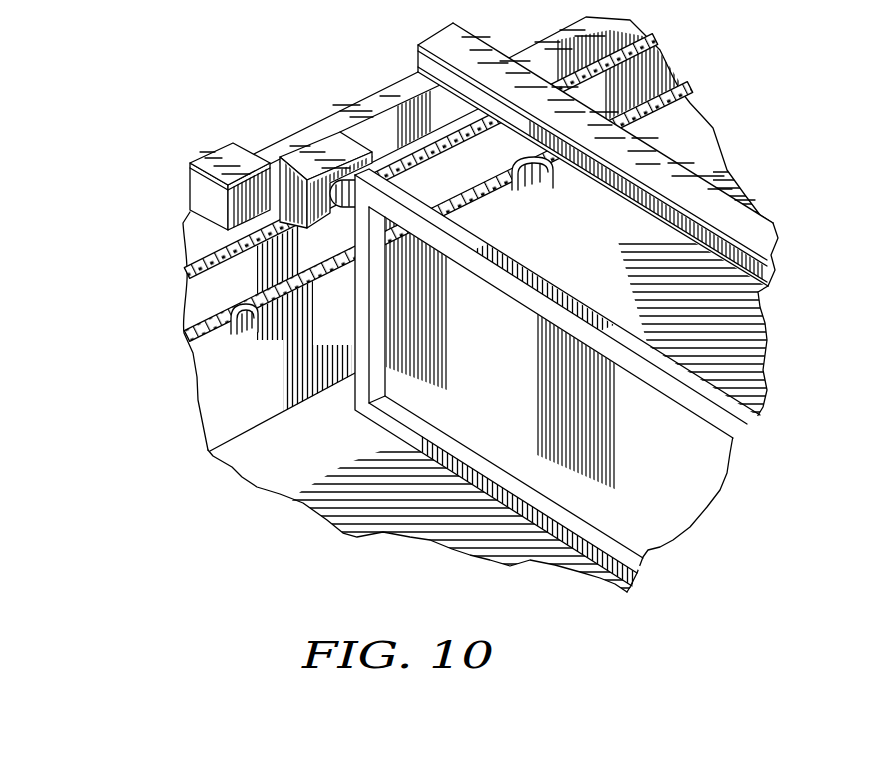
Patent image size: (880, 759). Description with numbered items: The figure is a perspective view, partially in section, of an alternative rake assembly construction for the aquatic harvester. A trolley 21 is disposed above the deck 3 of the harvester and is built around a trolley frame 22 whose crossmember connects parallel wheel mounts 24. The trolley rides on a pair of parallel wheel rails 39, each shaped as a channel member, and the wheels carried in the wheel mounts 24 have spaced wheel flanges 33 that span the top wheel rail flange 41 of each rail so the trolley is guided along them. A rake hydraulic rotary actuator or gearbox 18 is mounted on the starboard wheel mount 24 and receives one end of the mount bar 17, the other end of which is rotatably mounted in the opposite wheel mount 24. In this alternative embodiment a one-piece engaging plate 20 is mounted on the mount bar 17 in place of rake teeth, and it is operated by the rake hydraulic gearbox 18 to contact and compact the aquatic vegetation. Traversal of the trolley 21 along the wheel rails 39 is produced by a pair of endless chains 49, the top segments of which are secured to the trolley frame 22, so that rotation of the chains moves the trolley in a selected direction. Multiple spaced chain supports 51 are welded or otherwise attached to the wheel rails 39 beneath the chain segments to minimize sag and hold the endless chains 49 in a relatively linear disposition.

The deck 3 is at (264, 478).
The mount bar 17 is at (333, 208).
The rake hydraulic rotary actuator or gearbox 18 is at (322, 157).
The one-piece engaging plate 20 is at (353, 413).
The trolley 21 is at (176, 207).
The trolley frame 22 is at (211, 196).
The wheel mount 24 is at (232, 170).
The wheel flange 33 is at (701, 184).
The wheel rail 39 is at (696, 113).
The top wheel rail flange 41 is at (270, 122).
The endless chain 49 is at (232, 302).
The chain support 51 is at (247, 338).